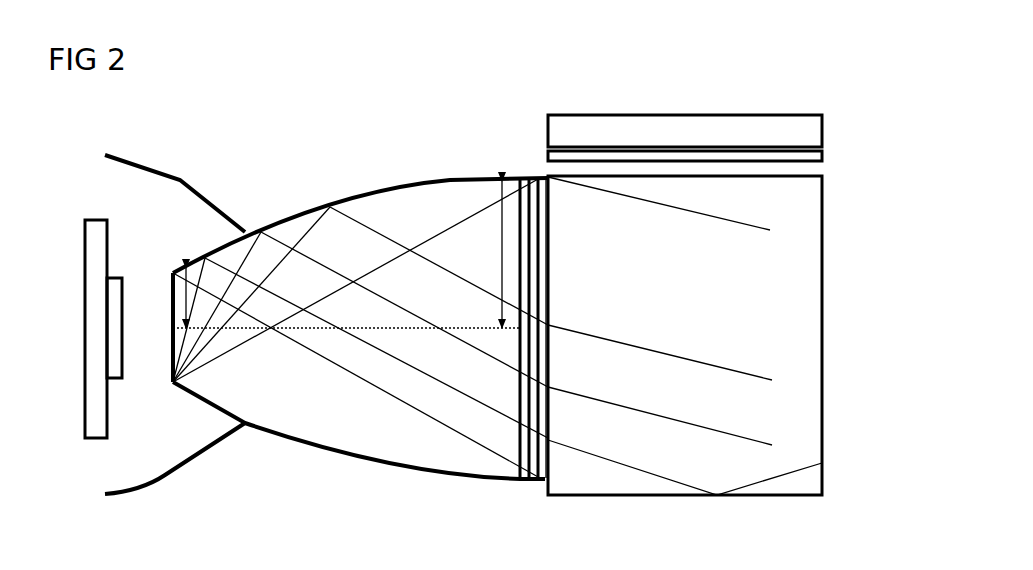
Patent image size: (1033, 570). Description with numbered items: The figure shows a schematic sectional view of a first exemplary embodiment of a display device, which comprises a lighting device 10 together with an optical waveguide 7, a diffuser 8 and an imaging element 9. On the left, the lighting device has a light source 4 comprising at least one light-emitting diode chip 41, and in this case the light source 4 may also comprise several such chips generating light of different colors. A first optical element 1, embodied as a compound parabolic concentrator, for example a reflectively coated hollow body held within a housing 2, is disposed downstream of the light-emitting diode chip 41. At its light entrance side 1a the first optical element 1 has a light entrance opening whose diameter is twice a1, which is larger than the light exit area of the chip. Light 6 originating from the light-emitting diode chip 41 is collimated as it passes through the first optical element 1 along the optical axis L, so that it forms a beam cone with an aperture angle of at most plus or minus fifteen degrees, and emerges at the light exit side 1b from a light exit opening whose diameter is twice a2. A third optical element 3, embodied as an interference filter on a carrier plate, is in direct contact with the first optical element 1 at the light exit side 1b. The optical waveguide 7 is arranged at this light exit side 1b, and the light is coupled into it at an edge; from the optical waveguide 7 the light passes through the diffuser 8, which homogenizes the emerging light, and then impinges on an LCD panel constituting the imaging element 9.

The first optical element 1 is at (442, 176).
The light entrance side 1a is at (162, 294).
The light exit side 1b is at (549, 360).
The housing 2 is at (208, 190).
The third optical element 3 is at (536, 177).
The light source 4 is at (70, 230).
The light-emitting diode chip 41 is at (118, 277).
The light 6 is at (262, 338).
The optical waveguide 7 is at (812, 342).
The diffuser 8 is at (822, 152).
The imaging element 9 is at (812, 132).
The optical arrangement 10 is at (400, 124).
The half-diameter of light entrance opening a1 is at (186, 316).
The half-diameter of light exit opening a2 is at (501, 262).
The optical axis L is at (423, 333).